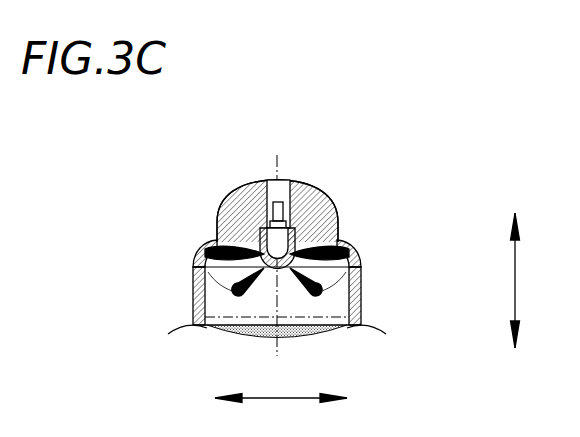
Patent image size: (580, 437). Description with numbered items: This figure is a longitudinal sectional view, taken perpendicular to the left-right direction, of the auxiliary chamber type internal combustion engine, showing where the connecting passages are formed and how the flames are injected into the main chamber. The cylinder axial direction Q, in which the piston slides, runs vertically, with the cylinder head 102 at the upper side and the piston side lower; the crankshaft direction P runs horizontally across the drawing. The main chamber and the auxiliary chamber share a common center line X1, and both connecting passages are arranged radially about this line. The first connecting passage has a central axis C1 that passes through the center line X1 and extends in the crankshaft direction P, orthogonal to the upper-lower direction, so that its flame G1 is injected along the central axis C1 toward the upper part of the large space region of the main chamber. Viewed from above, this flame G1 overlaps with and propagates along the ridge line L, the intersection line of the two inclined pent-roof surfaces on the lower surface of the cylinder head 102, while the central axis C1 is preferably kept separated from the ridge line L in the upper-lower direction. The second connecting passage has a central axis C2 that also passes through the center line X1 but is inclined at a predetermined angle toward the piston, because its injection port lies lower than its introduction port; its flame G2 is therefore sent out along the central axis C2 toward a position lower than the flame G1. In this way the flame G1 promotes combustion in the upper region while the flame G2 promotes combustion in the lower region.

The center line X1 is at (283, 168).
The ridge line L is at (218, 207).
The cylinder head 102 is at (295, 257).
The flame G1 is at (203, 250).
The flame G2 is at (208, 268).
The central axis C1 is at (361, 258).
The central axis C2 is at (197, 290).
The cylinder axial direction Q is at (526, 280).
The crankshaft direction P is at (281, 389).